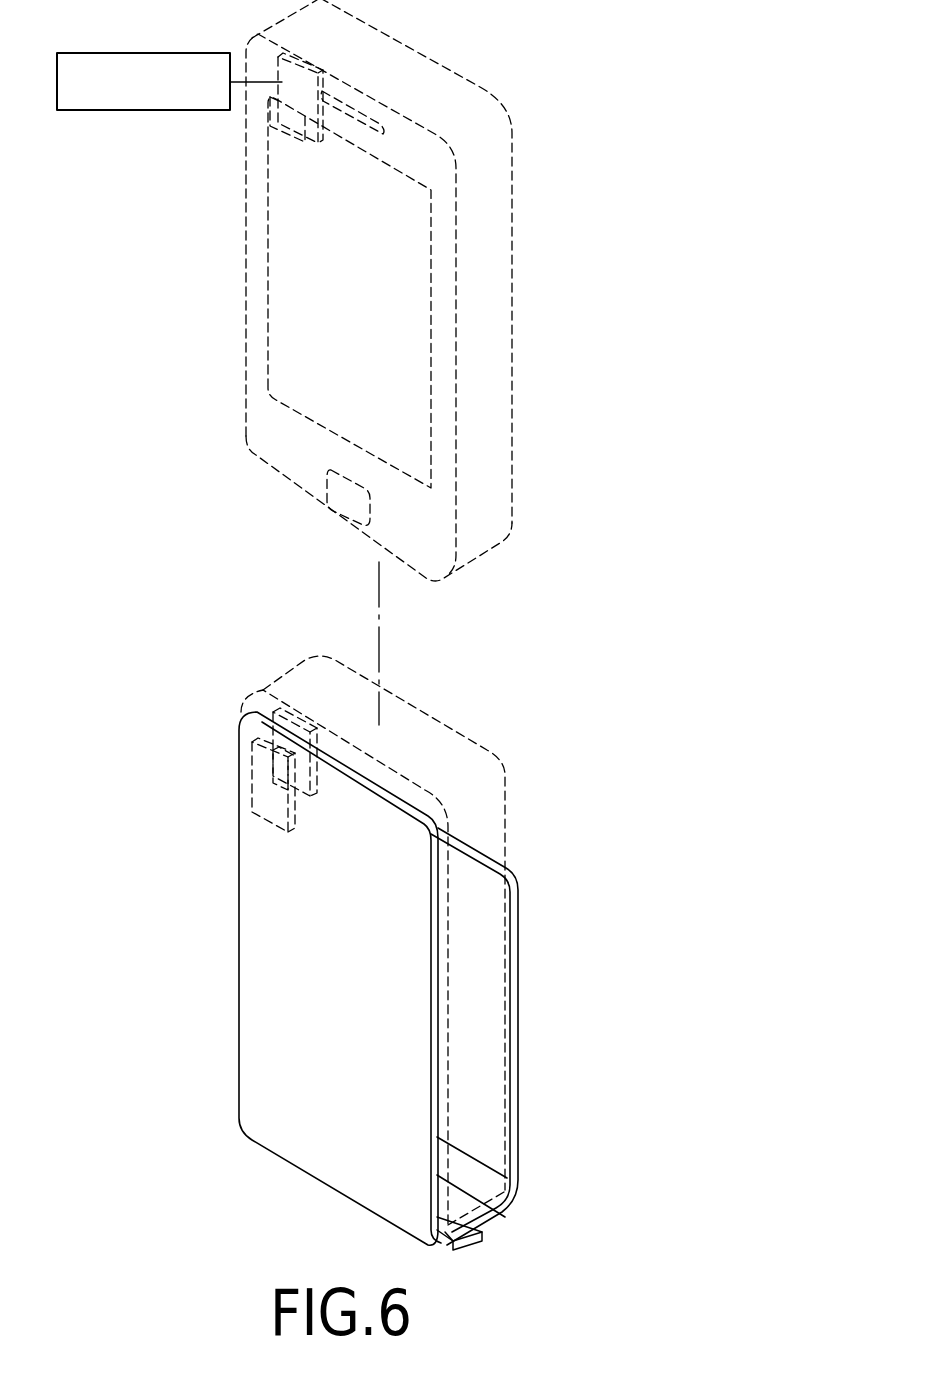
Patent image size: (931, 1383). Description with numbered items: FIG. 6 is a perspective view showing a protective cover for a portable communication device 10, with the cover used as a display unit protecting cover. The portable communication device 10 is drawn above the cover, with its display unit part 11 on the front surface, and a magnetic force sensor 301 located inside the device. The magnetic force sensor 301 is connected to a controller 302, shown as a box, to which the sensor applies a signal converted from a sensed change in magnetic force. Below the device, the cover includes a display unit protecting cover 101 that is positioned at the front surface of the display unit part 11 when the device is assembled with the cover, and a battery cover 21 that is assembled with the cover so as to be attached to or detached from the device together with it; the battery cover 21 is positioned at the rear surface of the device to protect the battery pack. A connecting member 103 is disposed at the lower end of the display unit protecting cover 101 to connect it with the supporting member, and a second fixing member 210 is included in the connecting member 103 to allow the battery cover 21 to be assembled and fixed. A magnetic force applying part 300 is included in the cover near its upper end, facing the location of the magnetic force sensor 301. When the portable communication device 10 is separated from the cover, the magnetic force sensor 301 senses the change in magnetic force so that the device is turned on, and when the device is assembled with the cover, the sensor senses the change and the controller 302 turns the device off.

The portable communication device 10 is at (522, 115).
The display unit part 11 is at (283, 307).
The battery cover 21 is at (518, 993).
The display unit protecting cover 101 is at (265, 987).
The connecting member 103 is at (488, 1222).
The second fixing member 210 is at (467, 1238).
The magnetic force applying part 300 is at (265, 788).
The magnetic force sensor 301 is at (297, 122).
The controller 302 is at (140, 52).